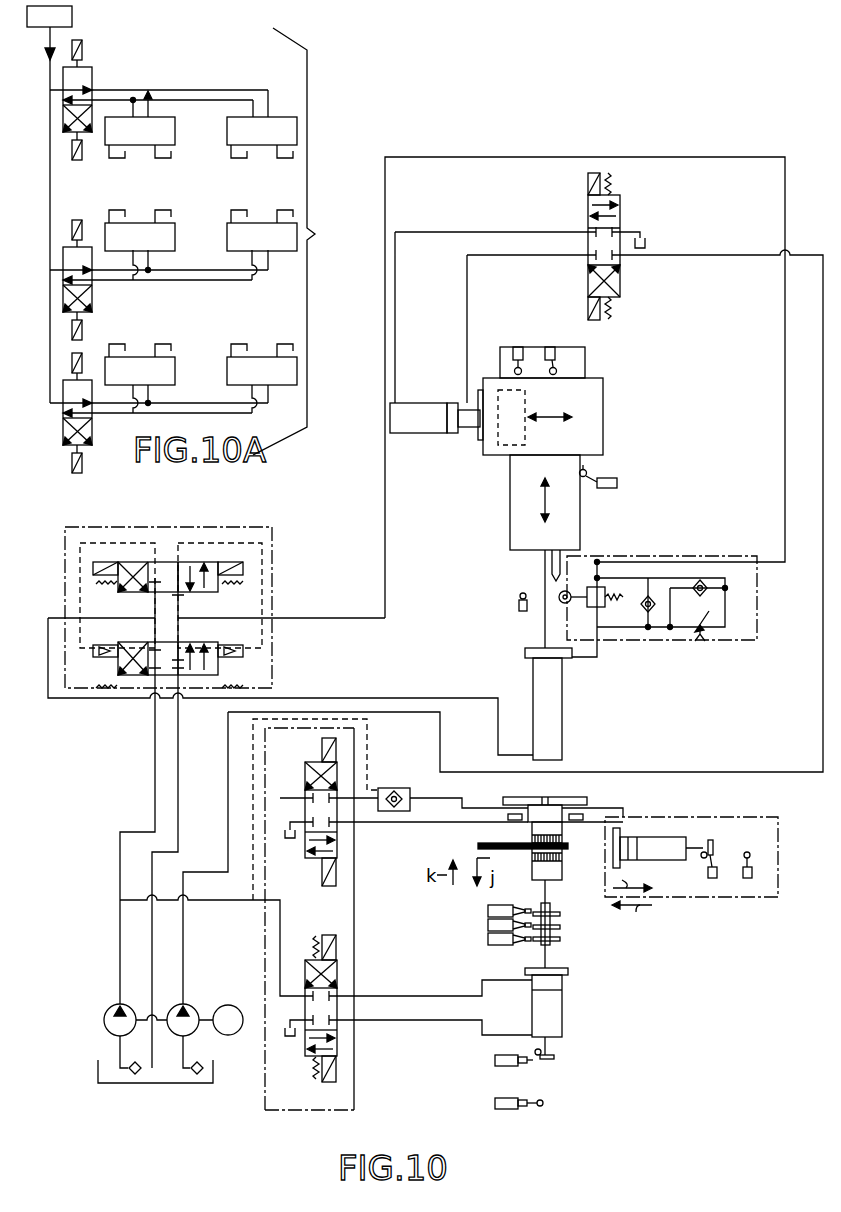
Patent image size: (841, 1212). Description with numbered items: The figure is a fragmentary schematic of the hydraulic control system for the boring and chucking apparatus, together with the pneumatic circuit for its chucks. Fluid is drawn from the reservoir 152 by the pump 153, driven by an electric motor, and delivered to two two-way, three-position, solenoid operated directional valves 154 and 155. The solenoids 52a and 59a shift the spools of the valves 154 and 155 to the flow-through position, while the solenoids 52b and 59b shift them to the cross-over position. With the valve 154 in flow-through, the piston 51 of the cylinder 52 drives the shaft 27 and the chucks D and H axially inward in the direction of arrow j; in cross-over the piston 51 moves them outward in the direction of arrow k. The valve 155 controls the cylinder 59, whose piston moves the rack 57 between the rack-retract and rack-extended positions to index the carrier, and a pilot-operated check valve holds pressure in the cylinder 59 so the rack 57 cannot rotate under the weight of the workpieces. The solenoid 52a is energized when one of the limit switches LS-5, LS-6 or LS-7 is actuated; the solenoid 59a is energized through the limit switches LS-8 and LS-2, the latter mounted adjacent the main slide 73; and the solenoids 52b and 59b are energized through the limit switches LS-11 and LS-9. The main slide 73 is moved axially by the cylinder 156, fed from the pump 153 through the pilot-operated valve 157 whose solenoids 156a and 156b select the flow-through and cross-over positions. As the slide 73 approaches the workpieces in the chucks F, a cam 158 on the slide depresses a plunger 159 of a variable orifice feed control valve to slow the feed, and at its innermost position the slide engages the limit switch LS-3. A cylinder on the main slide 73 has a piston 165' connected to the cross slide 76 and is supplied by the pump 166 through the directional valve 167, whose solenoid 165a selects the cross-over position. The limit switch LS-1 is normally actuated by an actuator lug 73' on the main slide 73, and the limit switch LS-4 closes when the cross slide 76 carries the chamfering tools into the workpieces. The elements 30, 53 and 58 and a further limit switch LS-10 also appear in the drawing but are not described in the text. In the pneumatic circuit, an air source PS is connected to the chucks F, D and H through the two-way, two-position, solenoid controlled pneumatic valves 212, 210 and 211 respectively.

In FIG. 10A, the source of pneumatic air PS is at (49, 16).
In FIG. 10A, the pneumatic valve 212 is at (92, 78).
In FIG. 10A, the pneumatic valve 210 is at (92, 300).
In FIG. 10A, the pneumatic valve 211 is at (92, 428).
In FIG. 10A, the workpiece holding chuck F is at (227, 128).
In FIG. 10A, the chuck D is at (227, 235).
In FIG. 10, the chuck D is at (580, 797).
In FIG. 10A, the chuck H is at (227, 368).
In FIG. 10, the chuck H is at (508, 797).
In FIG. 10, the pilot-operated valve 157 is at (174, 607).
In FIG. 10, the solenoid 156a is at (93, 566).
In FIG. 10, the solenoid 156b is at (243, 566).
In FIG. 10, the solenoid operated directional valve 155 is at (338, 828).
In FIG. 10, the solenoid 59b is at (322, 750).
In FIG. 10, the solenoid 59a is at (330, 886).
In FIG. 10, the solenoid operated directional valve 154 is at (341, 1016).
In FIG. 10, the solenoid 52b is at (338, 948).
In FIG. 10, the solenoid 52a is at (328, 1082).
In FIG. 10, the pump 153 is at (107, 1010).
In FIG. 10, the pump 166 is at (194, 1008).
In FIG. 10, the reservoir 152 is at (100, 1083).
In FIG. 10, the solenoid operated directional valve 167 is at (599, 246).
In FIG. 10, the solenoid 165a is at (588, 183).
In FIG. 10, the piston 165' is at (466, 441).
In FIG. 10, the cross slide 76 is at (603, 410).
In FIG. 10, the actuator lug 73' is at (542, 378).
In FIG. 10, the main slide 73 is at (521, 502).
In FIG. 10, the cam 158 is at (552, 566).
In FIG. 10, the plunger 159 is at (559, 597).
In FIG. 10, the hydraulically operated cylinder 156 is at (562, 699).
In FIG. 10, the rack 30 is at (562, 849).
In FIG. 10, the rack 57 is at (480, 843).
In FIG. 10, the shaft 27 is at (562, 872).
In FIG. 10, the actuator unit 58 is at (720, 873).
In FIG. 10, the hydraulically operated cylinder 59 is at (686, 862).
In FIG. 10, the piston 51 is at (549, 988).
In FIG. 10, the hydraulically operated cylinder 52 is at (563, 1014).
In FIG. 10, the plate 53 is at (556, 1057).
In FIG. 10, the limit switch LS-1 is at (550, 345).
In FIG. 10, the limit switch LS-2 is at (624, 469).
In FIG. 10, the limit switch LS-3 is at (512, 612).
In FIG. 10, the limit switch LS-4 is at (518, 347).
In FIG. 10, the limit switch LS-5 is at (488, 912).
In FIG. 10, the limit switch LS-6 is at (488, 926).
In FIG. 10, the limit switch LS-7 is at (488, 940).
In FIG. 10, the limit switch LS-8 is at (495, 1060).
In FIG. 10, the limit switch LS-9 is at (495, 1103).
In FIG. 10, the limit switch LS-10 is at (752, 873).
In FIG. 10, the limit switch LS-11 is at (712, 878).